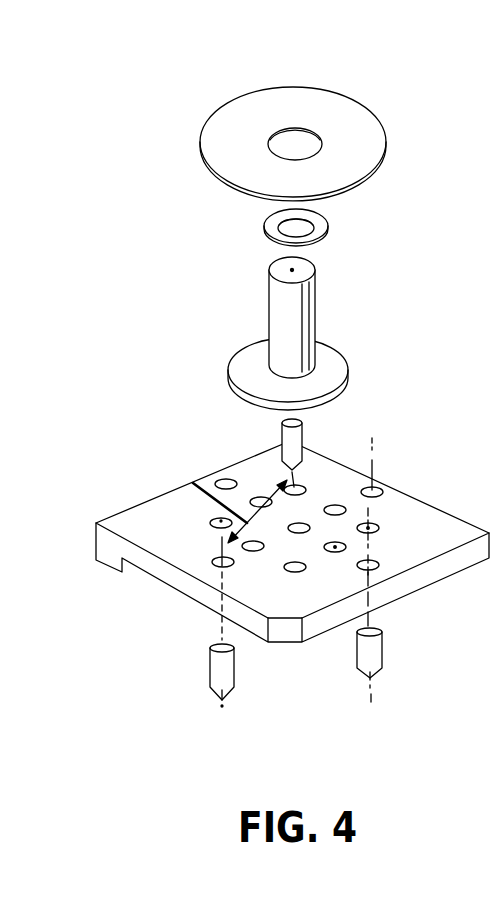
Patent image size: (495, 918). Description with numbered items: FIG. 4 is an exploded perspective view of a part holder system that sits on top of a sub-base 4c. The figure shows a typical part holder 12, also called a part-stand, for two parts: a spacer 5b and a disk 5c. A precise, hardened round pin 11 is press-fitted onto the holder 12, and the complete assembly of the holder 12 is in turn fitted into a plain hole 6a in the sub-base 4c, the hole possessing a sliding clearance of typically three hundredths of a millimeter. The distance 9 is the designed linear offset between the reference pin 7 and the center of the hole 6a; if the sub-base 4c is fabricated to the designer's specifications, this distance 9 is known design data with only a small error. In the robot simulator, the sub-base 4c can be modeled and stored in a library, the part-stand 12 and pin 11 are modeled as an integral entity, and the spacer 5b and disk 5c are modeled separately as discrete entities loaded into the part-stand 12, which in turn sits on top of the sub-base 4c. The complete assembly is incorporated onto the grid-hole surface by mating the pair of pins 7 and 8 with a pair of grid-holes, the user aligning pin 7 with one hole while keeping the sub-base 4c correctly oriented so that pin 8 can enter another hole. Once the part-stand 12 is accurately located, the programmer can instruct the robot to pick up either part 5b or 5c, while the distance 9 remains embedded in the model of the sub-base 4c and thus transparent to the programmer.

The disk 5c is at (355, 135).
The spacer 5b is at (265, 230).
The part holder 12 is at (310, 322).
The sub-base 4c is at (390, 527).
The distance 9 is at (193, 483).
The plain hole 6a is at (302, 527).
The round pin 11 is at (280, 442).
The reference pin 7 is at (213, 668).
The pin 8 is at (357, 655).